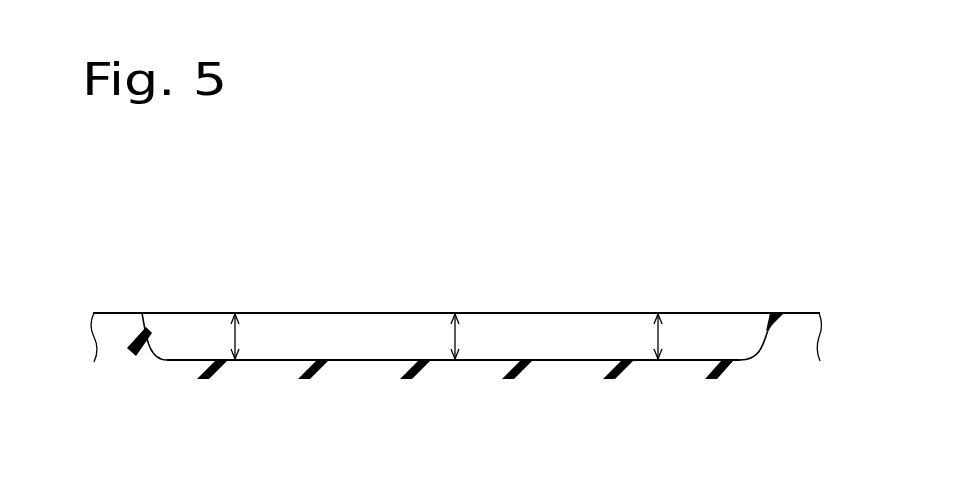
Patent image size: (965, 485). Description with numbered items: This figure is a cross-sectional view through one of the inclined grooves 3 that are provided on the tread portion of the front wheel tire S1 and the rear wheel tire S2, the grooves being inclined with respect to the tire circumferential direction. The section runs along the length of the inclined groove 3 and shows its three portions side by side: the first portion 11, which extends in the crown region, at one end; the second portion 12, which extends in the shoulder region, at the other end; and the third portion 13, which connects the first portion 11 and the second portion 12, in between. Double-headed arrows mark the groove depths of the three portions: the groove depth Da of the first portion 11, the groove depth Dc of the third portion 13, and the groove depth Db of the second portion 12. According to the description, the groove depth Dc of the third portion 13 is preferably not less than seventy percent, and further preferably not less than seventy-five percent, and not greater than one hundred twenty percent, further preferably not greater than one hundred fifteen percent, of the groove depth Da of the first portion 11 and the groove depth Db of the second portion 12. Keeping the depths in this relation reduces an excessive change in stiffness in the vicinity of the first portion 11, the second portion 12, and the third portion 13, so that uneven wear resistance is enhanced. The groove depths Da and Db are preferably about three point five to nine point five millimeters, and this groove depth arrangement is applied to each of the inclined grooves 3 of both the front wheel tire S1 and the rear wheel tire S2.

The inclined groove 3 is at (749, 210).
The first portion 11 is at (198, 288).
The second portion 12 is at (657, 288).
The third portion 13 is at (447, 288).
The front wheel tire S1 is at (510, 248).
The rear wheel tire S2 is at (805, 231).
The groove depth of the first portion Da is at (237, 339).
The groove depth of the second portion Db is at (660, 339).
The groove depth of the third portion Dc is at (457, 339).